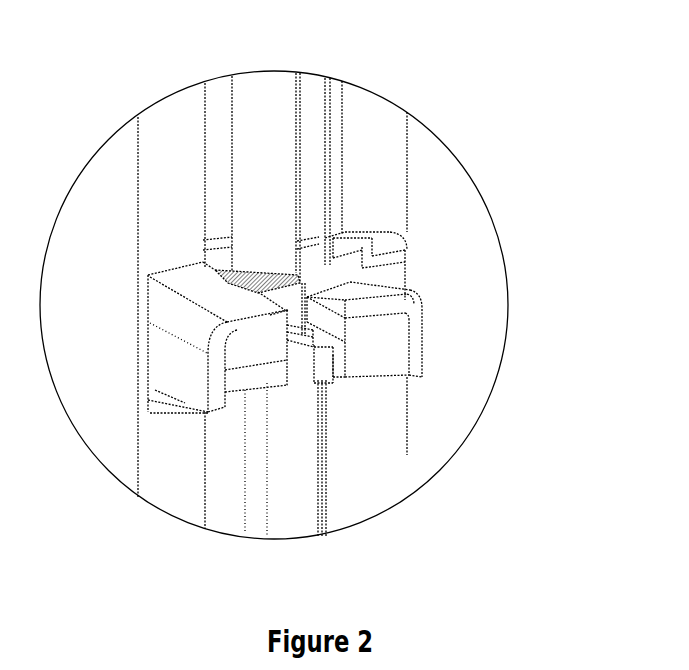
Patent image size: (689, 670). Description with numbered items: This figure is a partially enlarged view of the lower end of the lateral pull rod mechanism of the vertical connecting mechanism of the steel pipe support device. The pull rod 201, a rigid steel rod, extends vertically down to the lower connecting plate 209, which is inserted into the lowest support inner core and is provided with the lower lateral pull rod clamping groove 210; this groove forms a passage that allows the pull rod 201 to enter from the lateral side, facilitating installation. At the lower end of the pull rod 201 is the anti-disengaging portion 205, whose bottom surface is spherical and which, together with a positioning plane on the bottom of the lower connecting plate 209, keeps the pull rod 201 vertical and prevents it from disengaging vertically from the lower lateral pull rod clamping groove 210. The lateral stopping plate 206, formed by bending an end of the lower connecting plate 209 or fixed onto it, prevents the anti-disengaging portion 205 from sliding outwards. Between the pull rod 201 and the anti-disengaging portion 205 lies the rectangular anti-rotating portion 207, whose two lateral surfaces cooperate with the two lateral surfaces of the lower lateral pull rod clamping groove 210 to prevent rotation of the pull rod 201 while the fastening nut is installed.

The pull rod 201 is at (260, 155).
The anti-disengaging portion 205 is at (291, 338).
The lateral stopping plate 206 is at (373, 353).
The anti-rotating portion 207 is at (303, 290).
The lower connecting plate 209 is at (178, 352).
The lower lateral pull rod clamping groove 210 is at (311, 318).